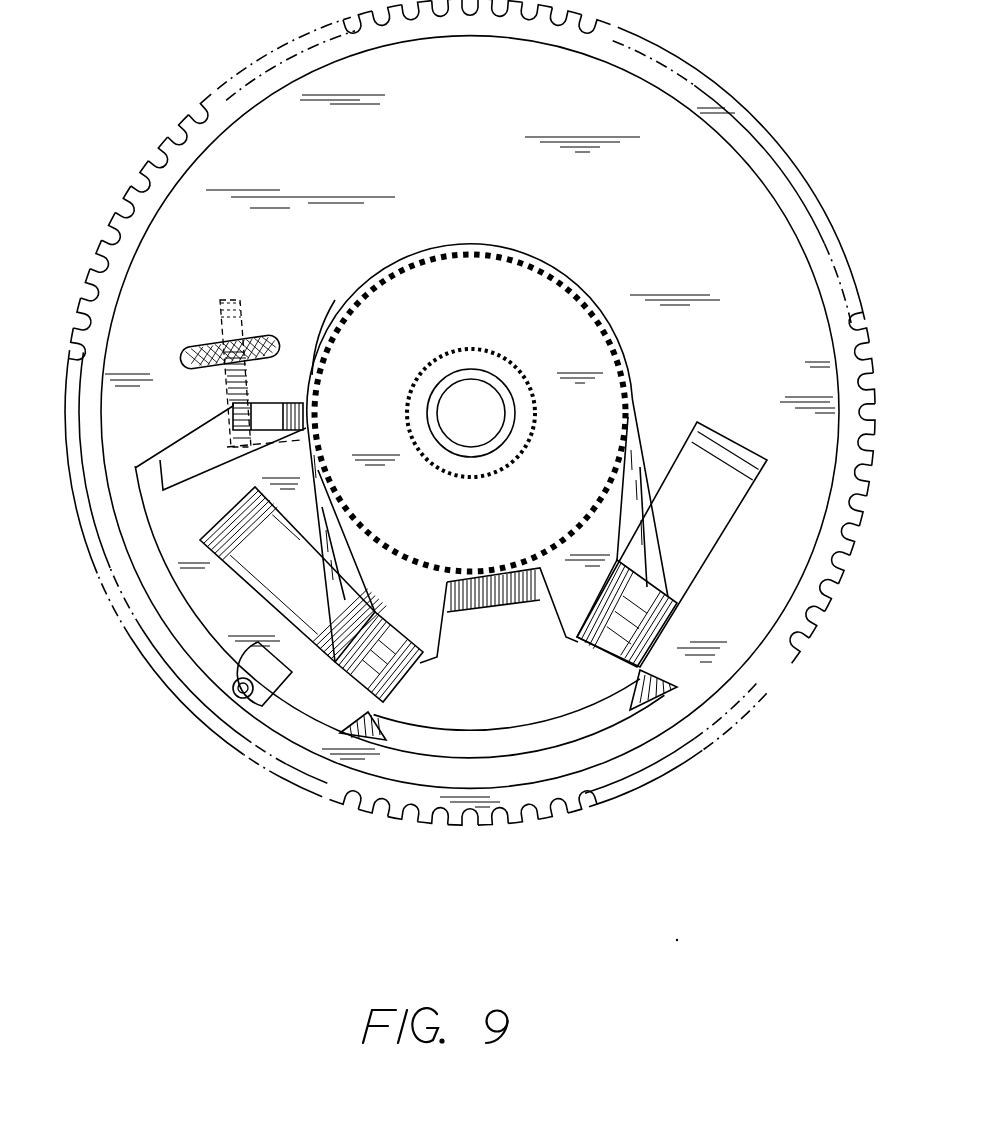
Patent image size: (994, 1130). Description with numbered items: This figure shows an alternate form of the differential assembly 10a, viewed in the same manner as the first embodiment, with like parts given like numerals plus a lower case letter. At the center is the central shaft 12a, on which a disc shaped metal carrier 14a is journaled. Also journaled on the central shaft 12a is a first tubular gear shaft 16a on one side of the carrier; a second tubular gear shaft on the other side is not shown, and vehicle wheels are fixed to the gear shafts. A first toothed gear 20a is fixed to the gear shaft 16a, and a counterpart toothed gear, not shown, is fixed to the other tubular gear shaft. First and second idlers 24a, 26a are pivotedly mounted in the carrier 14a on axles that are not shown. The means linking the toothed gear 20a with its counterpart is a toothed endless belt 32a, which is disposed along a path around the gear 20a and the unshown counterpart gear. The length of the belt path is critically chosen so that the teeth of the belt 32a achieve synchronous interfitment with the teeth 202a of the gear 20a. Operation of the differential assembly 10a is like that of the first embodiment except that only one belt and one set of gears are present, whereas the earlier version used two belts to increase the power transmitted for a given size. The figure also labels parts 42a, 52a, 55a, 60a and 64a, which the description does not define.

The differential assembly 10a is at (756, 104).
The central shaft 12a is at (465, 407).
The disc shaped metal carrier 14a is at (680, 703).
The first tubular gear shaft 16a is at (497, 437).
The first toothed gear 20a is at (504, 545).
The first idler 24a is at (300, 583).
The second idler 26a is at (700, 517).
The toothed endless belt 32a is at (650, 588).
The ring gear 42a is at (856, 566).
The brake block 52a is at (500, 598).
The pivot lug 55a is at (236, 688).
The adjusting screw plate 60a is at (236, 414).
The knob 64a is at (175, 358).
The teeth 202a is at (328, 372).